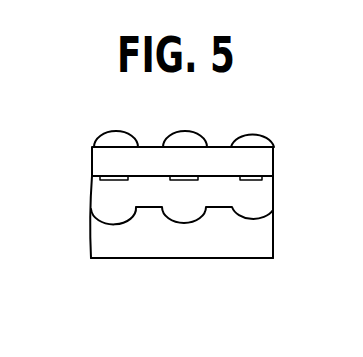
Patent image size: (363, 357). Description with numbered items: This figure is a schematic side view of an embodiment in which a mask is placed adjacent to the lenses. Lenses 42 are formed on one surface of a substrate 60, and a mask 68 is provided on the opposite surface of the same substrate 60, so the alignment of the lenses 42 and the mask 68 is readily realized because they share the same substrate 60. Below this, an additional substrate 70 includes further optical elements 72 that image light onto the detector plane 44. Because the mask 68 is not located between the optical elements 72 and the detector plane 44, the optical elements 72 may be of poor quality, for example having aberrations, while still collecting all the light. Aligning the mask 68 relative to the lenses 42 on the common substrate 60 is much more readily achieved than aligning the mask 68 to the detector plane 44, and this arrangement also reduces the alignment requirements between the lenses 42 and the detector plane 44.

The lenses 42 is at (253, 135).
The substrate 60 is at (255, 160).
The mask 68 is at (263, 177).
The additional substrate 70 is at (255, 240).
The optical elements 72 is at (91, 218).
The detector plane 44 is at (255, 258).